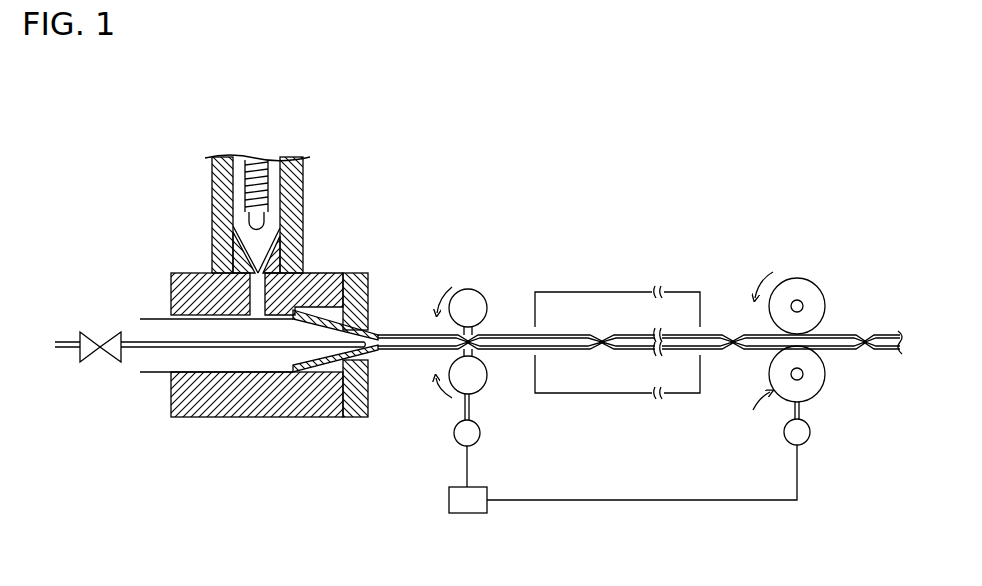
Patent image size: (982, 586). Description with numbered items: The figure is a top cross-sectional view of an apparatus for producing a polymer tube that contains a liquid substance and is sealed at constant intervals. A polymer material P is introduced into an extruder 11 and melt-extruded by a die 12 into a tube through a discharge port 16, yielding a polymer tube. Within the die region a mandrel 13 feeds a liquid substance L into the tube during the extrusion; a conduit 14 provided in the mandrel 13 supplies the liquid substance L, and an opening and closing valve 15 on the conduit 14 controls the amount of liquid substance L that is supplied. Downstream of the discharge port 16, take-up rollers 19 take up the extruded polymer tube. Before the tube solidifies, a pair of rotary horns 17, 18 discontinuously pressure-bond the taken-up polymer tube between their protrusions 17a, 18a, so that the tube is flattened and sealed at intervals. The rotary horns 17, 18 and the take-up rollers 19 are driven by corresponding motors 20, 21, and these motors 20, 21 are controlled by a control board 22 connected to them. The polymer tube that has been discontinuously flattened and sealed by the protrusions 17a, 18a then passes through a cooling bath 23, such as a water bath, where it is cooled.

The extruder 11 is at (292, 182).
The die 12 is at (355, 287).
The mandrel 13 is at (226, 373).
The conduit 14 is at (128, 352).
The opening and closing valve 15 is at (90, 362).
The discharge port 16 is at (372, 328).
The rotary horn 17 is at (468, 289).
The protrusion 17a is at (475, 332).
The rotary horn 18 is at (481, 388).
The protrusion 18a is at (483, 353).
The take-up rollers 19 is at (808, 280).
The motor 20 is at (456, 445).
The motor 21 is at (812, 430).
The control board 22 is at (449, 497).
The cooling bath 23 is at (595, 303).
The polymer material P is at (250, 240).
The liquid substance L is at (278, 345).